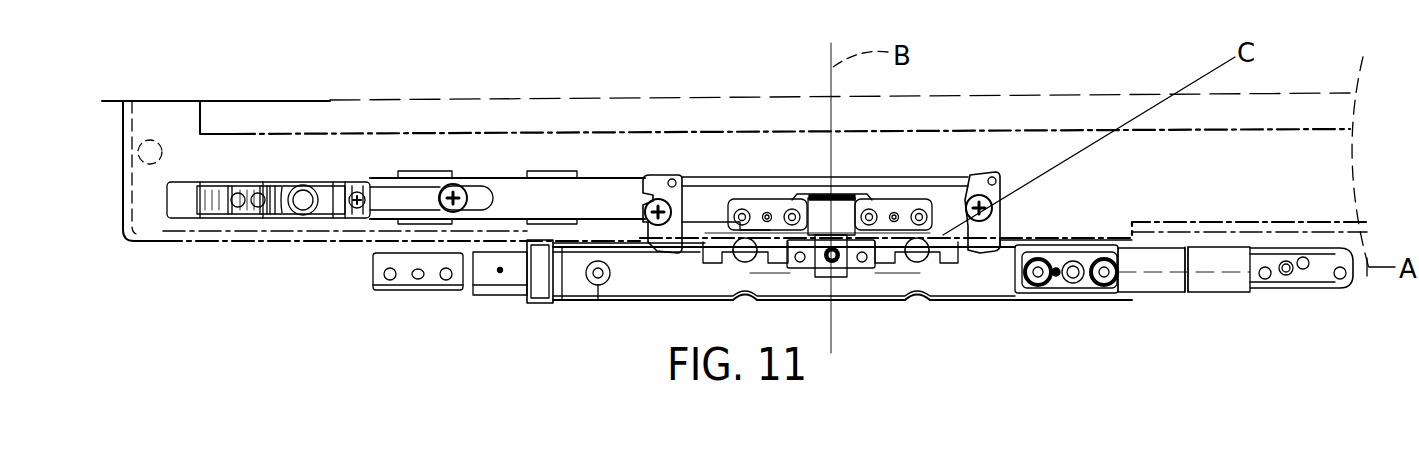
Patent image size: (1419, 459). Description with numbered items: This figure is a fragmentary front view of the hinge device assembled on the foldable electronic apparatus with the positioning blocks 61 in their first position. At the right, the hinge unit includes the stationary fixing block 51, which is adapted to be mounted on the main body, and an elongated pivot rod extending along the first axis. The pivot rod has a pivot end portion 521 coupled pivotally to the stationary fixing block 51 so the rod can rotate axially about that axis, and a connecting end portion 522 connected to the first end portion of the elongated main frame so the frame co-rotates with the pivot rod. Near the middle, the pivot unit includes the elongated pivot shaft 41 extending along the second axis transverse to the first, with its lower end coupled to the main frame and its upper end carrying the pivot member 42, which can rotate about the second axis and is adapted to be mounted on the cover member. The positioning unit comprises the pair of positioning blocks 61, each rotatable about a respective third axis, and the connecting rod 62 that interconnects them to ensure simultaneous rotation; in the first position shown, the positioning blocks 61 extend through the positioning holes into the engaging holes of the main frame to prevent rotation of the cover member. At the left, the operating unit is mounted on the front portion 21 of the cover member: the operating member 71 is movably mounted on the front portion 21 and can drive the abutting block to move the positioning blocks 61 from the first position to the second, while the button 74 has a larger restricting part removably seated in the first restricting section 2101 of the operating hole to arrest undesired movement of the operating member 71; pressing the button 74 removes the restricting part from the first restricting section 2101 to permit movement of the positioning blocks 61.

The front portion 21 is at (150, 225).
The operating member 71 is at (268, 229).
The button 74 is at (300, 186).
The first restricting section 2101 is at (268, 217).
The positioning blocks 61 is at (657, 182).
The connecting rod 62 is at (806, 182).
The pivot member 42 is at (762, 203).
The pivot shaft 41 is at (834, 215).
The connecting end portion 522 is at (1085, 287).
The pivot end portion 521 is at (1170, 282).
The stationary fixing block 51 is at (1308, 278).